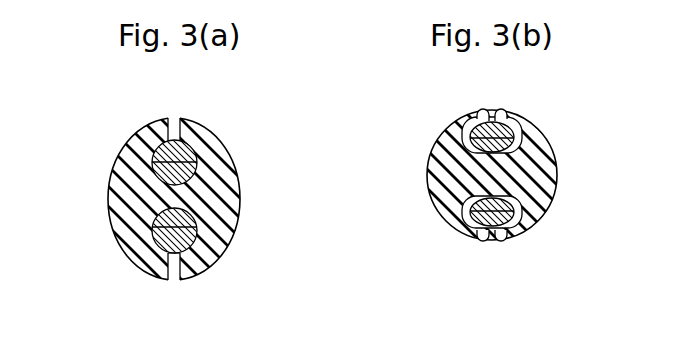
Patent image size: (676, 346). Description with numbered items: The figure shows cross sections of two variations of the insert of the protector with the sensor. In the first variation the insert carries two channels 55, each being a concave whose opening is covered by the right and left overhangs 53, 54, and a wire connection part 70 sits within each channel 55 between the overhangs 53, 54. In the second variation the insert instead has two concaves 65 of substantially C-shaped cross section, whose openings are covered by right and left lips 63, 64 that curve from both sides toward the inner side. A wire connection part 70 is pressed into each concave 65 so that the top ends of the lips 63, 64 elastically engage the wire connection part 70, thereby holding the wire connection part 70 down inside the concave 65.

In FIG. 3A, the overhang 53 is at (160, 125).
In FIG. 3A, the overhang 54 is at (187, 125).
In FIG. 3A, the channel 55 is at (200, 148).
In FIG. 3A, the wire connection part 70 is at (152, 158).
In FIG. 3B, the wire connection part 70 is at (463, 132).
In FIG. 3B, the lip 63 is at (483, 114).
In FIG. 3B, the lip 64 is at (499, 113).
In FIG. 3B, the concave 65 is at (517, 135).